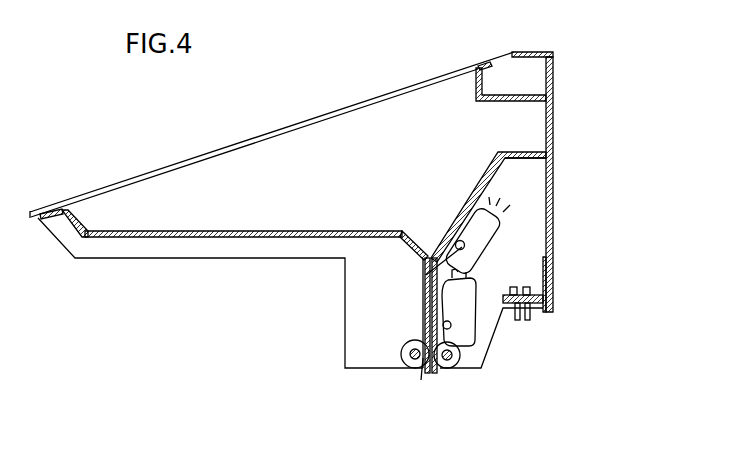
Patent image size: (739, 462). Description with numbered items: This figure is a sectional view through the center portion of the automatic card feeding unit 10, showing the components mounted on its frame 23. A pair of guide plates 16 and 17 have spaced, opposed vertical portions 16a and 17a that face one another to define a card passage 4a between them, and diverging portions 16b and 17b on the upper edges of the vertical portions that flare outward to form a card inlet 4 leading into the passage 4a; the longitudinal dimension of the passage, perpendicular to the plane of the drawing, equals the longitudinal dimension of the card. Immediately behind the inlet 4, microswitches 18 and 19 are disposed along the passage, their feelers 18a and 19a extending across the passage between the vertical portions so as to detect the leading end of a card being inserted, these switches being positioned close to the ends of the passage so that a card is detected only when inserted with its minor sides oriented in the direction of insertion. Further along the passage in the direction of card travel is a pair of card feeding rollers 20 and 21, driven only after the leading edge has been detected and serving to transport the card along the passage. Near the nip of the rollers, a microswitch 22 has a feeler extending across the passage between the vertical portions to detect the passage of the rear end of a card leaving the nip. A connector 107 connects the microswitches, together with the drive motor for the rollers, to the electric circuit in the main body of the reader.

The automatic card feeding unit 10 is at (265, 131).
The frame 23 is at (351, 106).
The card inlet 4 is at (425, 226).
The card passage 4a is at (424, 292).
The guide plate 16 is at (372, 229).
The vertical portion 16a is at (420, 320).
The diverging portion 16b is at (410, 226).
The guide plate 17 is at (476, 193).
The vertical portion 17a is at (436, 374).
The diverging portion 17b is at (455, 213).
The microswitch 18 is at (542, 228).
The microswitch 19 is at (505, 225).
The feeler 18a is at (408, 261).
The feeler 19a is at (432, 265).
The card feeding roller 20 is at (406, 364).
The card feeding roller 21 is at (459, 370).
The microswitch 22 is at (462, 327).
The connector 107 is at (516, 285).